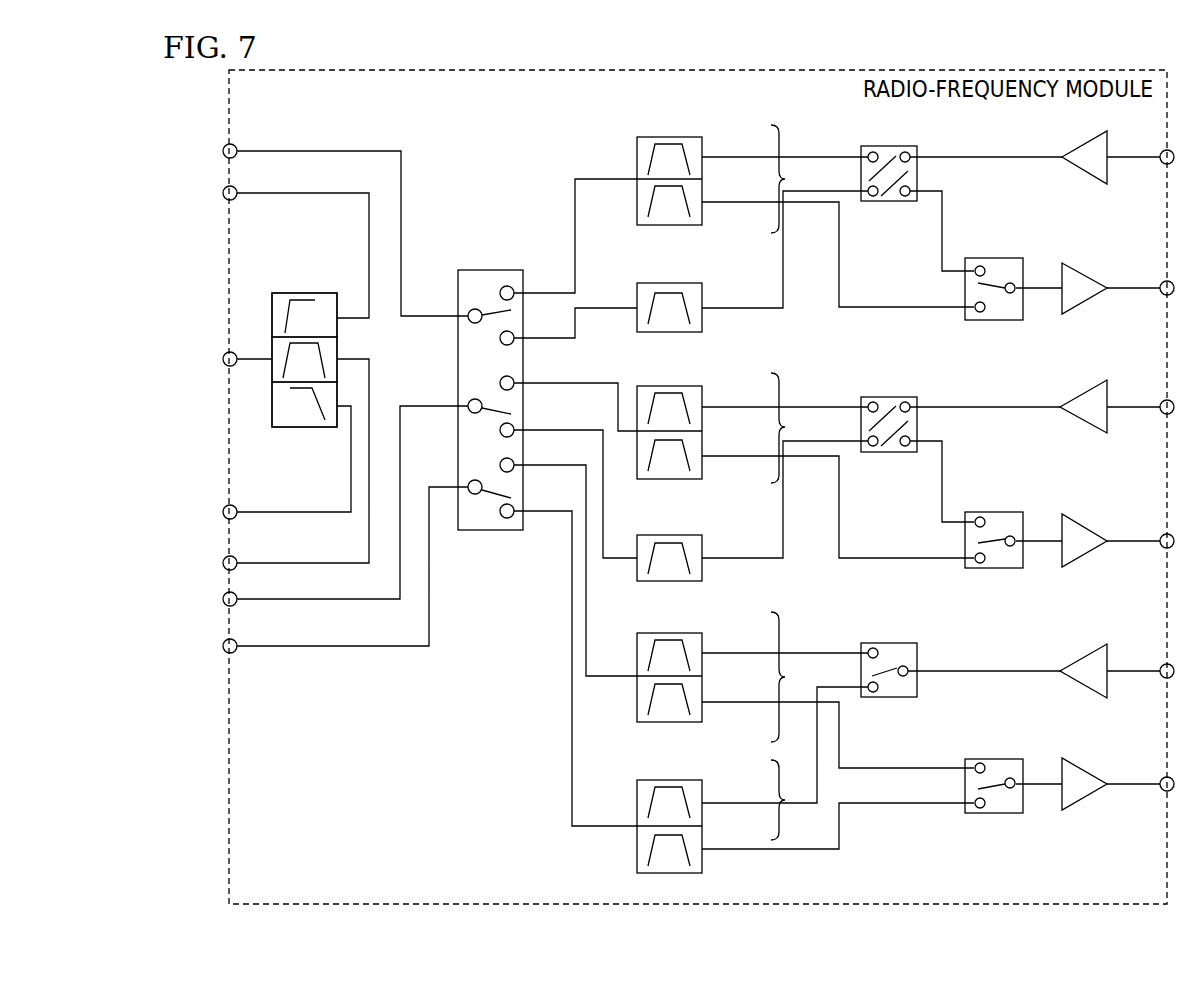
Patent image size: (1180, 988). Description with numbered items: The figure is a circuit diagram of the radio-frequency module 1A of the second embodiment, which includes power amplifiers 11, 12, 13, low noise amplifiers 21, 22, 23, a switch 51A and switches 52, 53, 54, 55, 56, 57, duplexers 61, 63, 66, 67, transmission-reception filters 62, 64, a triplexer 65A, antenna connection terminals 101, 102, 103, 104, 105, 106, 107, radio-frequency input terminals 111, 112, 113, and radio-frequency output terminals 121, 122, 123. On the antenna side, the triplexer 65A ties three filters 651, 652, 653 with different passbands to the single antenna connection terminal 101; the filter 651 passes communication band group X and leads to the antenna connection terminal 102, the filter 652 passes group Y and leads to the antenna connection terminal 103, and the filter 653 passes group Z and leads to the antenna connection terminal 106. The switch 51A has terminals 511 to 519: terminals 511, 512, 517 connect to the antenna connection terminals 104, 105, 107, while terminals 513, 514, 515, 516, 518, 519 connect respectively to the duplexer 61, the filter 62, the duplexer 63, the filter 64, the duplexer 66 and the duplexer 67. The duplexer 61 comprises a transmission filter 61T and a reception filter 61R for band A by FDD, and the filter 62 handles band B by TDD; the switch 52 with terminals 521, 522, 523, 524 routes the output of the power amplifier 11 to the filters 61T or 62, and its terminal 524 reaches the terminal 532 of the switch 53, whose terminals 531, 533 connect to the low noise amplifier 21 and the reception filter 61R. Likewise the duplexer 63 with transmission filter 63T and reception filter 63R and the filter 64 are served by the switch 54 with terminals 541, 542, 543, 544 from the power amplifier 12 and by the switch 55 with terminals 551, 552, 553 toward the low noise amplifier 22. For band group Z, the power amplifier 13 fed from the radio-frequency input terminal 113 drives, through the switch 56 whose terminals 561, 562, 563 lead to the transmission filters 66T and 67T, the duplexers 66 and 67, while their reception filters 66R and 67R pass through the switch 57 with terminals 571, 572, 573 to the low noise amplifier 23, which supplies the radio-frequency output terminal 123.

The radio-frequency module 1A is at (1050, 70).
The antenna connection terminal 101 is at (226, 352).
The antenna connection terminal 102 is at (226, 200).
The antenna connection terminal 103 is at (226, 556).
The antenna connection terminal 104 is at (226, 145).
The antenna connection terminal 105 is at (225, 606).
The antenna connection terminal 106 is at (226, 505).
The antenna connection terminal 107 is at (225, 652).
The triplexer 65A is at (302, 244).
The filter 651 is at (307, 291).
The filter 652 is at (270, 370).
The filter 653 is at (306, 429).
The switch 51A is at (482, 268).
The terminal 511 is at (466, 311).
The terminal 512 is at (463, 417).
The terminal 513 is at (512, 285).
The terminal 514 is at (513, 332).
The terminal 515 is at (514, 378).
The terminal 516 is at (517, 436).
The terminal 517 is at (472, 495).
The terminal 518 is at (517, 470).
The terminal 519 is at (517, 516).
The duplexer 61 is at (722, 181).
The transmission filter 61T is at (706, 146).
The reception filter 61R is at (706, 216).
The transmission-reception filter 62 is at (706, 298).
The duplexer 63 is at (722, 432).
The transmission filter 63T is at (706, 395).
The reception filter 63R is at (706, 468).
The transmission-reception filter 64 is at (706, 550).
The duplexer 66 is at (722, 678).
The transmission filter 66T is at (706, 641).
The reception filter 66R is at (706, 714).
The duplexer 67 is at (721, 827).
The transmission filter 67T is at (706, 788).
The reception filter 67R is at (706, 820).
The switch 52 is at (885, 146).
The terminal 521 is at (864, 148).
The terminal 522 is at (870, 200).
The terminal 523 is at (912, 146).
The terminal 524 is at (907, 200).
The switch 53 is at (993, 257).
The terminal 531 is at (1018, 280).
The terminal 532 is at (973, 264).
The terminal 533 is at (985, 320).
The switch 54 is at (885, 397).
The terminal 541 is at (864, 398).
The terminal 542 is at (870, 450).
The terminal 543 is at (912, 396).
The terminal 544 is at (907, 450).
The switch 55 is at (993, 511).
The terminal 551 is at (1018, 533).
The terminal 552 is at (973, 515).
The terminal 553 is at (985, 570).
The switch 56 is at (885, 643).
The terminal 561 is at (910, 665).
The terminal 562 is at (864, 645).
The terminal 563 is at (876, 696).
The switch 57 is at (993, 758).
The terminal 571 is at (1018, 776).
The terminal 572 is at (973, 761).
The terminal 573 is at (978, 813).
The power amplifier 11 is at (1077, 150).
The power amplifier 12 is at (1085, 396).
The power amplifier 13 is at (1085, 660).
The low noise amplifier 21 is at (1083, 308).
The low noise amplifier 22 is at (1085, 563).
The low noise amplifier 23 is at (1085, 806).
The radio-frequency input terminal 111 is at (1158, 152).
The radio-frequency input terminal 112 is at (1158, 402).
The radio-frequency input terminal 113 is at (1158, 665).
The radio-frequency output terminal 121 is at (1158, 283).
The radio-frequency output terminal 122 is at (1158, 535).
The radio-frequency output terminal 123 is at (1158, 778).